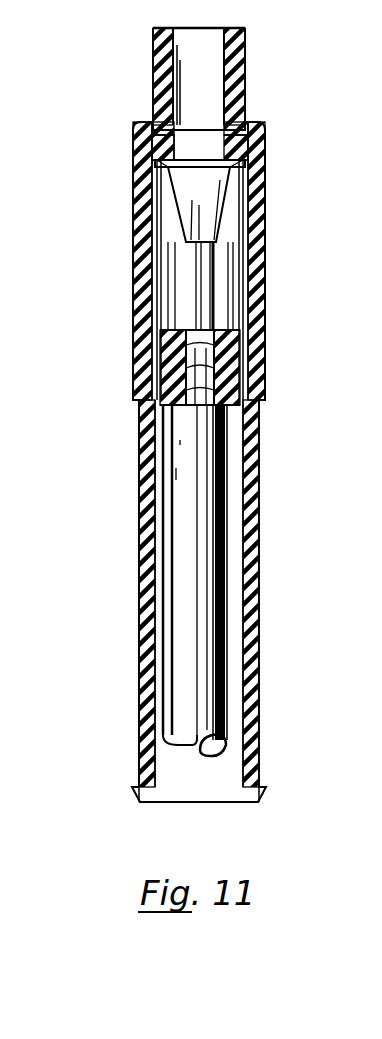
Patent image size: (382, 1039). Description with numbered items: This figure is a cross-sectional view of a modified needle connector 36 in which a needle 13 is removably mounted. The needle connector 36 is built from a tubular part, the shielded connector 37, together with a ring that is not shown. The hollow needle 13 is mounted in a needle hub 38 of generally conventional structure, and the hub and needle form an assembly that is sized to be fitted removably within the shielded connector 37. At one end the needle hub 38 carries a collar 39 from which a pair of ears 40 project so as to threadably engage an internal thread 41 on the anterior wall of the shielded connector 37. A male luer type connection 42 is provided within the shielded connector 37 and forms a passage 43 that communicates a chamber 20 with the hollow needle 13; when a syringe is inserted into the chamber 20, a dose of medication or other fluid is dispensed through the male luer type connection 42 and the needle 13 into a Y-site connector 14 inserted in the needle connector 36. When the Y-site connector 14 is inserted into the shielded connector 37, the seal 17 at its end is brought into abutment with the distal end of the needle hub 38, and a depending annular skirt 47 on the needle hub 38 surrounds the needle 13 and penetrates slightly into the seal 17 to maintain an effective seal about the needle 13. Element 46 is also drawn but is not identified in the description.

The needle 13 is at (190, 440).
The Y-site connector 14 is at (236, 516).
The seal 17 is at (243, 390).
The chamber 20 is at (226, 30).
The needle connector 36 is at (100, 338).
The shielded connector 37 is at (133, 382).
The needle hub 38 is at (250, 232).
The collar 39 is at (168, 190).
The ears 40 is at (157, 166).
The internal thread 41 is at (265, 128).
The male luer type connection 42 is at (145, 128).
The passage 43 is at (210, 130).
The tube 46 is at (212, 296).
The annular skirt 47 is at (240, 333).